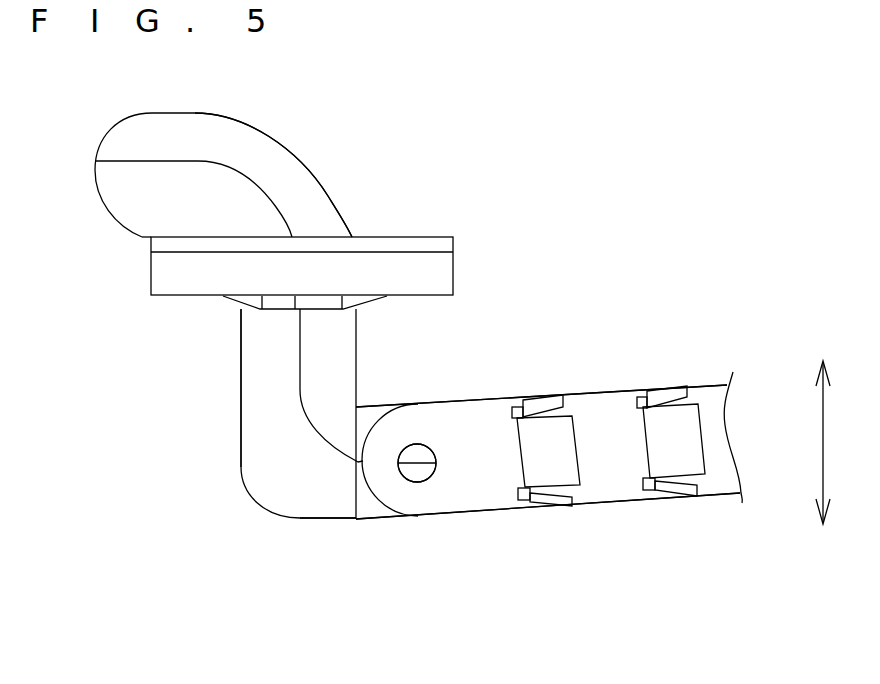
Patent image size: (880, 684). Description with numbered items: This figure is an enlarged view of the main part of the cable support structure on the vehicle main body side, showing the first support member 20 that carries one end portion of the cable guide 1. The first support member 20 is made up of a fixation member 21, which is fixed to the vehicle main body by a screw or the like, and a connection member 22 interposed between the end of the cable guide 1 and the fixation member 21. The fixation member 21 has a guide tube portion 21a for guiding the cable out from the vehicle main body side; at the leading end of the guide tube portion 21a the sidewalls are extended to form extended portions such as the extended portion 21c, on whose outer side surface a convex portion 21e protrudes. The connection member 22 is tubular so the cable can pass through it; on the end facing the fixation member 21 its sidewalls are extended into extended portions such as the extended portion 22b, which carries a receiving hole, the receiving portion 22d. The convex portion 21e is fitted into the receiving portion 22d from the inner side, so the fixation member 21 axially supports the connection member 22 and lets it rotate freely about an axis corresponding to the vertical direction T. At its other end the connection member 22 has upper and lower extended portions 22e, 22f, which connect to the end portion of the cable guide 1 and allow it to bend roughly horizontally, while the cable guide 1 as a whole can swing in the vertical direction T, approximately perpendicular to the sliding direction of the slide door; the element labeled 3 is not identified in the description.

The cable guide 1 is at (617, 390).
The fastener element row 3 is at (627, 507).
The first support member 20 is at (347, 208).
The fixation member 21 is at (240, 378).
The guide tube portion 21a is at (300, 152).
The extended portion 21c is at (372, 512).
The convex portion 21e is at (420, 472).
The connection member 22 is at (488, 512).
The extended portion 22b is at (410, 423).
The receiving portion 22d is at (425, 445).
The extended portion 22e is at (547, 392).
The extended portion 22f is at (548, 508).
The vertical direction T is at (833, 442).